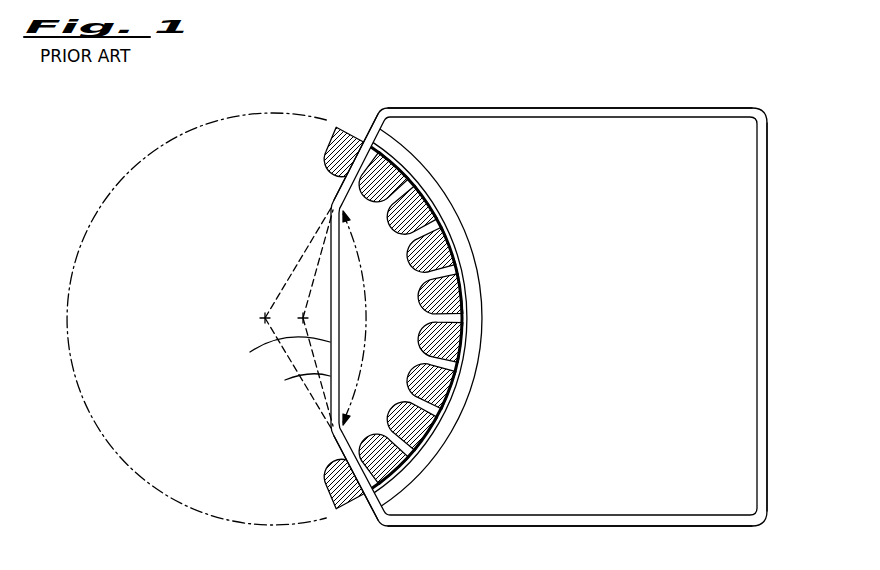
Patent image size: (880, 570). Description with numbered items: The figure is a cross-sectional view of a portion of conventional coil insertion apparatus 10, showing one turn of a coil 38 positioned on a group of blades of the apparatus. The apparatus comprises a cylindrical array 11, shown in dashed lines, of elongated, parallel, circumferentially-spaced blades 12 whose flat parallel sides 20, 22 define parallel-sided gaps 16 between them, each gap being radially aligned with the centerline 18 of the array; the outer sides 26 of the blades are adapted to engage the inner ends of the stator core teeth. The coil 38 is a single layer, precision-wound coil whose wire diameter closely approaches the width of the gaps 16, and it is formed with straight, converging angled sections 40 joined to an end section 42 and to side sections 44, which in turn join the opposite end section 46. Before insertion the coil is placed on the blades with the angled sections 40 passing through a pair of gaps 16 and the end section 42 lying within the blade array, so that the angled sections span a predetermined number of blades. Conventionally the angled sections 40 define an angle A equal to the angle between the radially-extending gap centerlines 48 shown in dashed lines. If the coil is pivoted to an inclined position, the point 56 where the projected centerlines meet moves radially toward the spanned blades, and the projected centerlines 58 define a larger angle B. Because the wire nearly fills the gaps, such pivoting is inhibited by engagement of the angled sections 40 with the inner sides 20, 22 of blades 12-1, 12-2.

The coil insertion apparatus 10 is at (515, 218).
The cylindrical array of blades 11 is at (80, 247).
The blade 12 is at (326, 165).
The blade 12-1 is at (385, 497).
The blade 12-2 is at (385, 133).
The gap 16 is at (410, 246).
The centerline 18 is at (262, 317).
The flat parallel side 20 is at (413, 393).
The flat parallel side 22 is at (440, 362).
The outer side 26 is at (362, 497).
The coil 38 is at (680, 60).
The angled section 40 is at (377, 113).
The end section 42 is at (290, 380).
The side section 44 is at (516, 108).
The end section 46 is at (763, 237).
The radially-extending centerline of gap 48 is at (297, 262).
The point 56 is at (278, 352).
The projected centerline 58 is at (320, 258).
The angle A is at (478, 313).
The angle B is at (358, 318).